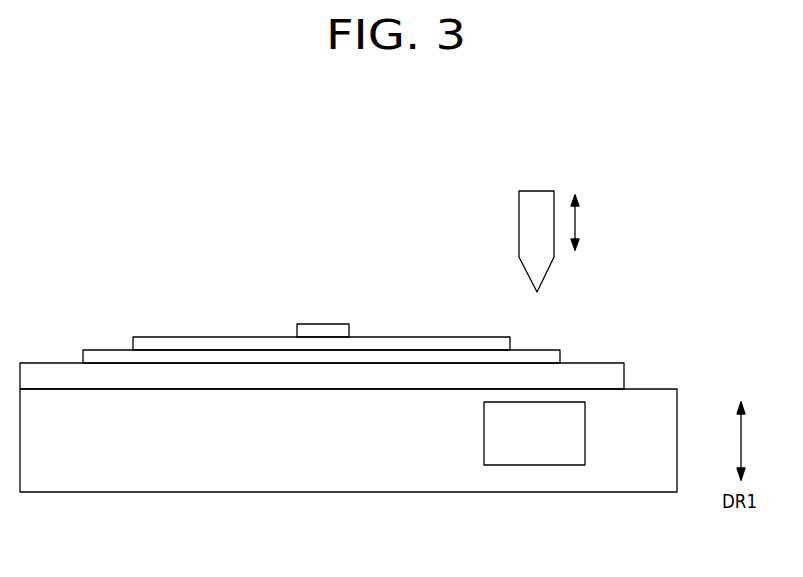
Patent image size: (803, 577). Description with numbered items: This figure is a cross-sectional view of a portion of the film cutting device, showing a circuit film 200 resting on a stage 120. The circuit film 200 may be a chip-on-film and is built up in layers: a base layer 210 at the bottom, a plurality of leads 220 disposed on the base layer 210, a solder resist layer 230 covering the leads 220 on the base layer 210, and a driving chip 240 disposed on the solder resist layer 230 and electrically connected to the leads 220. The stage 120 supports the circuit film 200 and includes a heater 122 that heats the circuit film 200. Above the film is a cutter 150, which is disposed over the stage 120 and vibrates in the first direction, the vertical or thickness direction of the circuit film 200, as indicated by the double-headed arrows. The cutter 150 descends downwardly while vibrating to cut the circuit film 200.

The stage 120 is at (243, 470).
The heater 122 is at (537, 455).
The cutter 150 is at (537, 197).
The circuit film 200 is at (345, 264).
The base layer 210 is at (48, 366).
The leads 220 is at (113, 354).
The solder resist layer 230 is at (221, 341).
The driving chip 240 is at (320, 330).